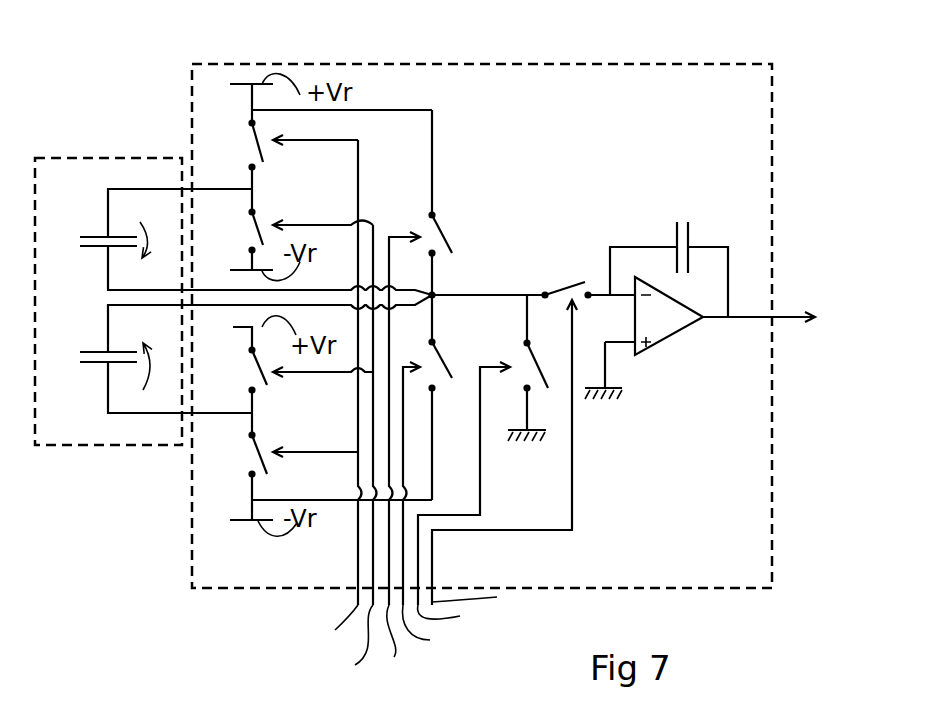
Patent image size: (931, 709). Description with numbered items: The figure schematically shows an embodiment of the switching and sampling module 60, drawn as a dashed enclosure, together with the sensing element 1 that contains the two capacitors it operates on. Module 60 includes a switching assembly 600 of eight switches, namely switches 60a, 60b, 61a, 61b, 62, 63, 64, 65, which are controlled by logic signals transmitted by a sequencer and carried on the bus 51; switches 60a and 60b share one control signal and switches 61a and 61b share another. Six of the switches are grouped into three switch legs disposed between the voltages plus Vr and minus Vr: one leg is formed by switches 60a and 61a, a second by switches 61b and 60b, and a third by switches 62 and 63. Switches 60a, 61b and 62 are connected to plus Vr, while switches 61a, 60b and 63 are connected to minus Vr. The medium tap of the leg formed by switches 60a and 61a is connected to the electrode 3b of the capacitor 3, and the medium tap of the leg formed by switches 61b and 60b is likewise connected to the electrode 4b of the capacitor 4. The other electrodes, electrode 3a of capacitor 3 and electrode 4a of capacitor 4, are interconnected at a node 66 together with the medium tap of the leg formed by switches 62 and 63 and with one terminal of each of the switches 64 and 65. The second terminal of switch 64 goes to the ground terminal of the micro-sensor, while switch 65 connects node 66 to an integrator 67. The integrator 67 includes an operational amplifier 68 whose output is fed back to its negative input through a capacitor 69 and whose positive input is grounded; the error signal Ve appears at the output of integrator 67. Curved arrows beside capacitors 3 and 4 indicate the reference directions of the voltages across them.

The sensor unit 1 is at (88, 158).
The capacitor 3 is at (239, 238).
The electrode 3a is at (103, 276).
The electrode 3b is at (88, 268).
The capacitor 4 is at (245, 370).
The electrode 4a is at (97, 352).
The electrode 4b is at (95, 363).
The bus 51 is at (325, 602).
The switching and sampling module 60 is at (772, 135).
The switch 60a is at (243, 158).
The switch 60b is at (241, 464).
The switch 61a is at (243, 247).
The switch 61b is at (243, 378).
The switch 62 is at (466, 233).
The switch 63 is at (460, 338).
The switch 64 is at (556, 337).
The switch 65 is at (562, 273).
The node 66 is at (438, 292).
The integrator 67 is at (689, 422).
The operational amplifier 68 is at (680, 333).
The capacitor 69 is at (688, 210).
The switching assembly 600 is at (458, 154).